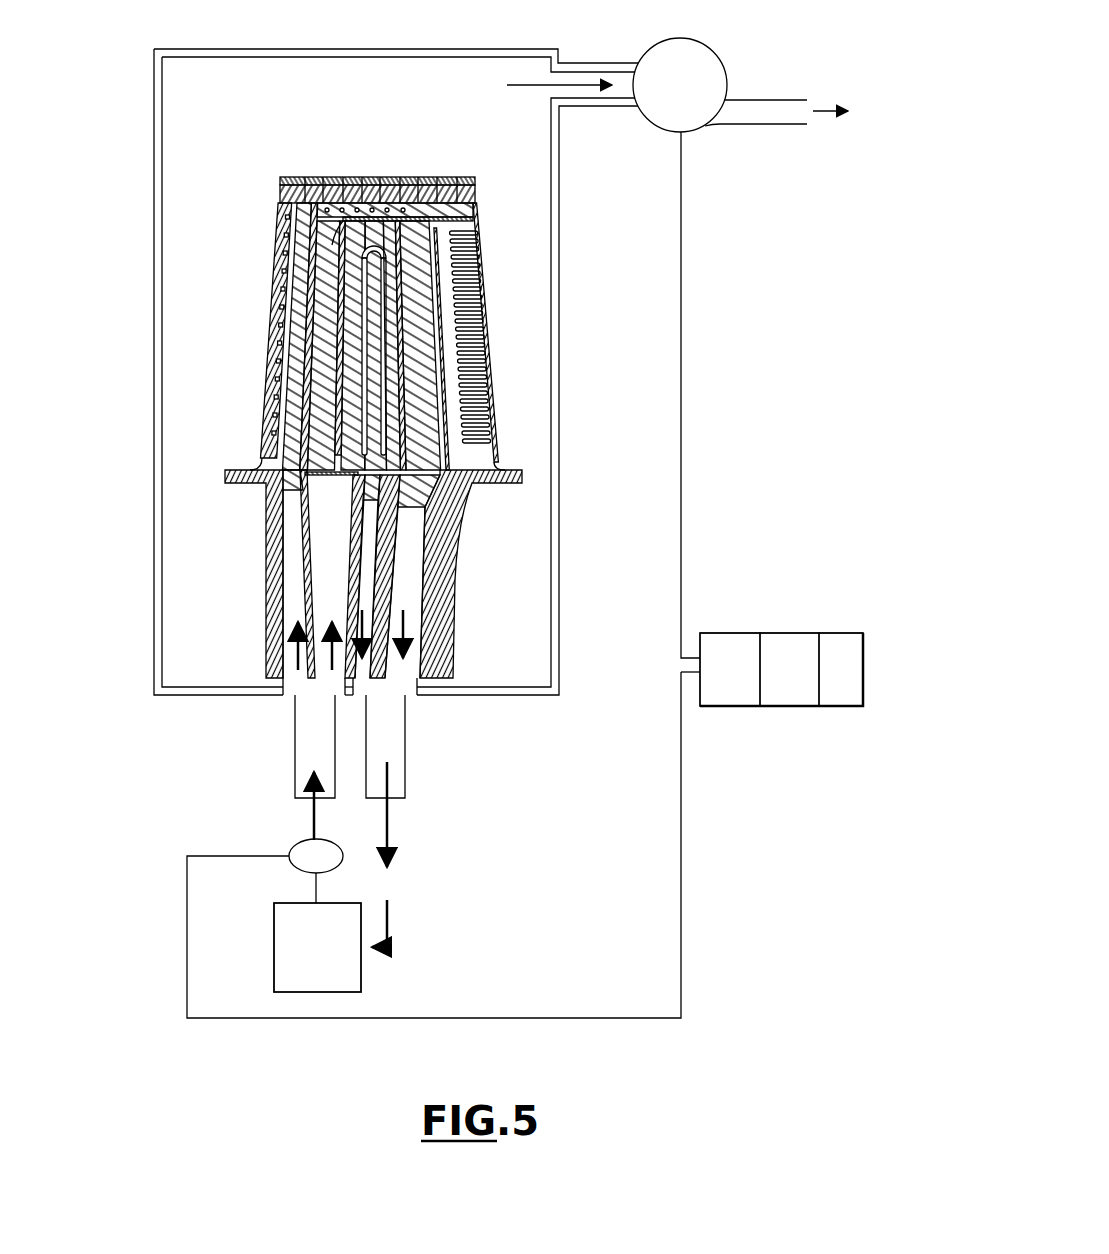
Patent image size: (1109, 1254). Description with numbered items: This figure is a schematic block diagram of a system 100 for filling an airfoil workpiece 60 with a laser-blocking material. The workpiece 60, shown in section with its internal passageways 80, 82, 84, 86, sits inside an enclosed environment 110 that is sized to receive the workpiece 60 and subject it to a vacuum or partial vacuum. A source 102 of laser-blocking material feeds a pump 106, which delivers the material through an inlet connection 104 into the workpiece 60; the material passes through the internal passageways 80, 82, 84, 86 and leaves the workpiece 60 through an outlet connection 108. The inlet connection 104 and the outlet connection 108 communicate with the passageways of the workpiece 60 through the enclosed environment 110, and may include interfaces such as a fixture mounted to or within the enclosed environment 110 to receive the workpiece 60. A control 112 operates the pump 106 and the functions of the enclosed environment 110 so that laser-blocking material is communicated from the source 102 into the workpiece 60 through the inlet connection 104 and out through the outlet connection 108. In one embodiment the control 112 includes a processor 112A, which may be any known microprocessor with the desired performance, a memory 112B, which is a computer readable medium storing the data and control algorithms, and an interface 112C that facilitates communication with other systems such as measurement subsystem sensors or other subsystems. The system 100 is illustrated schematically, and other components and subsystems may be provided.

The system 100 is at (132, 327).
The workpiece 60 is at (238, 350).
The passageway 80 is at (293, 650).
The passageway 82 is at (327, 583).
The passageway 84 is at (360, 597).
The passageway 86 is at (405, 632).
The source 102 is at (336, 961).
The inlet connection 104 is at (295, 745).
The pump 106 is at (292, 852).
The outlet connection 108 is at (405, 772).
The enclosed environment 110 is at (559, 517).
The control 112 is at (812, 650).
The processor 112A is at (777, 703).
The memory 112B is at (848, 703).
The interface 112C is at (748, 703).